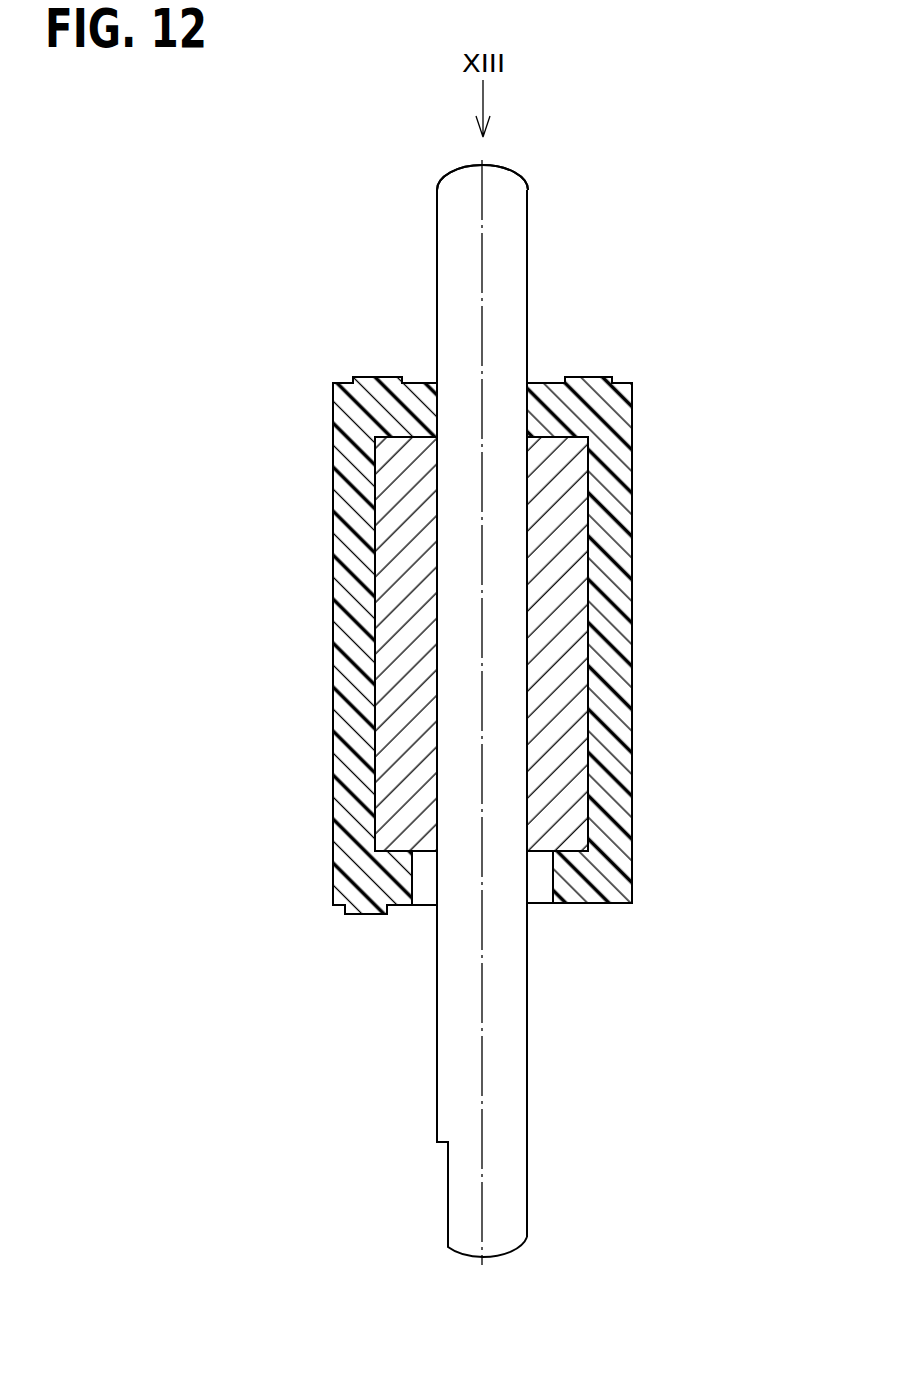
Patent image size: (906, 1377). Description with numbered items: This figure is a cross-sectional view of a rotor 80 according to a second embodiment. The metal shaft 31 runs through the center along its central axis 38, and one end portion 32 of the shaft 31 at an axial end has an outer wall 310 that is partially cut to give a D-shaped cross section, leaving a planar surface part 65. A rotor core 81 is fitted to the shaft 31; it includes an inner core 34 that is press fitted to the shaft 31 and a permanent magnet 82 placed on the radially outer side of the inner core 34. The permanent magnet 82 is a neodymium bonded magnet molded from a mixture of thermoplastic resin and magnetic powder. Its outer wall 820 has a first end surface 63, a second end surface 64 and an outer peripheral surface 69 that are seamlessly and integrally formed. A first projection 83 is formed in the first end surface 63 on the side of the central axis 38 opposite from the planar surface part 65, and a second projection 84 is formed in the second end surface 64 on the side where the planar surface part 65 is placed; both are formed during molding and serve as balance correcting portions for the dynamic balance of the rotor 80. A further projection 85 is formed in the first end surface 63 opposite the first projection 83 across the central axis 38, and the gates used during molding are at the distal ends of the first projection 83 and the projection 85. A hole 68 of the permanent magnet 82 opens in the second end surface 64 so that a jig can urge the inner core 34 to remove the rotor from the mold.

The shaft 31 is at (508, 243).
The one end portion 32 is at (513, 1187).
The central axis 38 is at (482, 212).
The outer wall 310 is at (437, 1120).
The planar surface part 65 is at (448, 1195).
The rotor 80 is at (478, 641).
The rotor core 81 is at (550, 645).
The permanent magnet 82 is at (617, 470).
The inner core 34 is at (577, 537).
The outer peripheral surface 69 is at (633, 733).
The first end surface 63 is at (420, 378).
The projection 85 is at (372, 377).
The outer wall 820 is at (551, 380).
The first projection 83 is at (590, 377).
The second projection 84 is at (355, 917).
The second end surface 64 is at (404, 907).
The hole 68 is at (548, 878).